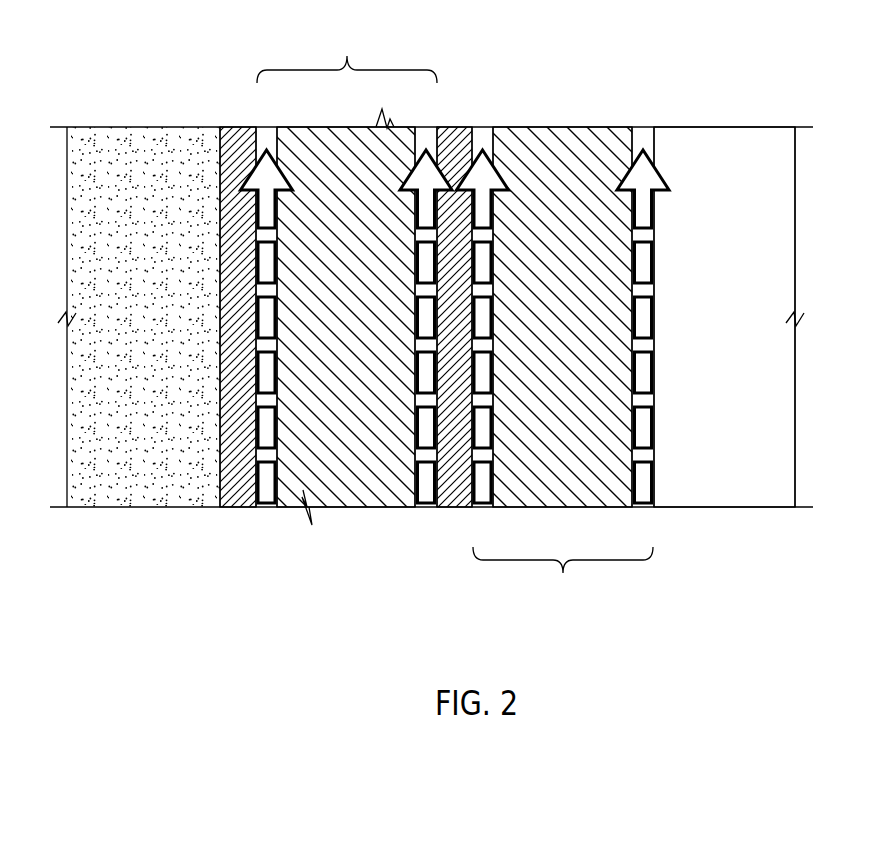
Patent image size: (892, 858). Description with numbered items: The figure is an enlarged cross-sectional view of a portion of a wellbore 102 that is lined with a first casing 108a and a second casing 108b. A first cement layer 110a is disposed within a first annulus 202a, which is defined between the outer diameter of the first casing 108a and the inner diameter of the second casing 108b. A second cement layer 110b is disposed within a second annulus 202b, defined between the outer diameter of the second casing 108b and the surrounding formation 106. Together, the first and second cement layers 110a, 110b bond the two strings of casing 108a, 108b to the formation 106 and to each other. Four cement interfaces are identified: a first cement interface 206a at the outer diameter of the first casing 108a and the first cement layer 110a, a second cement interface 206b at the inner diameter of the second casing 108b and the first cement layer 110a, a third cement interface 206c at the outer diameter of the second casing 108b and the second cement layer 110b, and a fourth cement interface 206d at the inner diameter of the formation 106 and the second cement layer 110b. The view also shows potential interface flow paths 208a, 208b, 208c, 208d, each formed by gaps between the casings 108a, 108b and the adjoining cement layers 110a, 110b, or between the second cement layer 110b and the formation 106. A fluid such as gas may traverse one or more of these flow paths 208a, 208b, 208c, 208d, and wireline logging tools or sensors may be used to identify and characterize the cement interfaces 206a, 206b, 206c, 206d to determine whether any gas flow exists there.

The wellbore 102 is at (334, 624).
The formation 106 is at (740, 235).
The first casing 108a is at (230, 507).
The second casing 108b is at (455, 507).
The first cement layer 110a is at (370, 235).
The second cement layer 110b is at (585, 235).
The first annulus 202a is at (347, 55).
The second annulus 202b is at (563, 576).
The first cement interface 206a is at (266, 118).
The second cement interface 206b is at (427, 118).
The third cement interface 206c is at (483, 118).
The fourth cement interface 206d is at (643, 118).
The interface flow path 208a is at (262, 507).
The interface flow path 208b is at (415, 440).
The interface flow path 208c is at (493, 440).
The interface flow path 208d is at (654, 485).